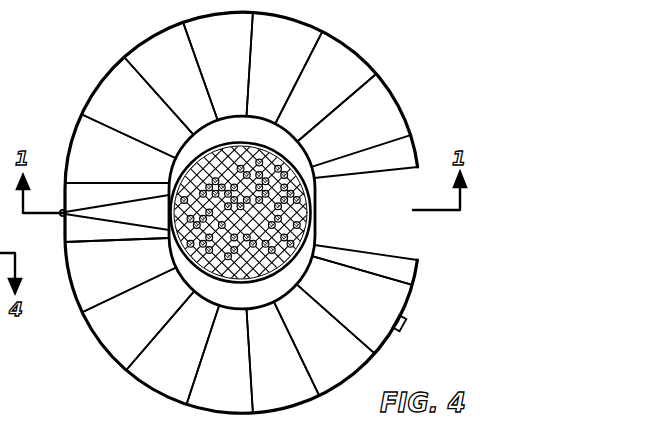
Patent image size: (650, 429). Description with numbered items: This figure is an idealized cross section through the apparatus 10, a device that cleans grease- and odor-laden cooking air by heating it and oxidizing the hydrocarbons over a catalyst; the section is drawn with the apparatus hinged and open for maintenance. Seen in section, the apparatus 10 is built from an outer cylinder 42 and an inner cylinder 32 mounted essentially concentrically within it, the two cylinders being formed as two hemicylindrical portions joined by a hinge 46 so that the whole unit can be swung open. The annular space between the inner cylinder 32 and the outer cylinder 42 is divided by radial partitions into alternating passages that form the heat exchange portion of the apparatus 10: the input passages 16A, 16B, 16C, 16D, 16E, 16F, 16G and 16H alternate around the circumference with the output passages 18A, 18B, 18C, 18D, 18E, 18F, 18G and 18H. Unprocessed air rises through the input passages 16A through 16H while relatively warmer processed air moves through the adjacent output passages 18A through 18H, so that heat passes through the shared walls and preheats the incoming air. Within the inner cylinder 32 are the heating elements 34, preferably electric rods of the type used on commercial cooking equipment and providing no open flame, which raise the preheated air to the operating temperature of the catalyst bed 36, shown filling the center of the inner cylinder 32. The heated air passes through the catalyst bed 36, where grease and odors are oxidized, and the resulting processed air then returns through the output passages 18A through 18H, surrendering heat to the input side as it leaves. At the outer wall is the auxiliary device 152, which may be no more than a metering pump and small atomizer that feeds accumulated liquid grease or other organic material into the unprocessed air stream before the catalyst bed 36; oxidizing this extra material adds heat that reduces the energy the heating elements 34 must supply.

The apparatus 10 is at (0, 62).
The outer cylinder 42 is at (348, 45).
The hinge 46 is at (59, 217).
The inner cylinder 32 is at (312, 212).
The heating elements 34 is at (303, 195).
The catalyst bed 36 is at (308, 238).
The auxiliary device 152 is at (408, 326).
The input passage 16A is at (88, 233).
The input passage 16B is at (118, 321).
The input passage 16C is at (203, 375).
The input passage 16D is at (338, 351).
The input passage 16E is at (380, 272).
The input passage 16F is at (335, 92).
The input passage 16G is at (204, 64).
The input passage 16H is at (118, 121).
The output passage 18A is at (367, 134).
The output passage 18B is at (371, 306).
The output passage 18C is at (291, 376).
The output passage 18D is at (158, 358).
The output passage 18E is at (100, 273).
The output passage 18F is at (131, 168).
The output passage 18G is at (160, 89).
The output passage 18H is at (260, 64).